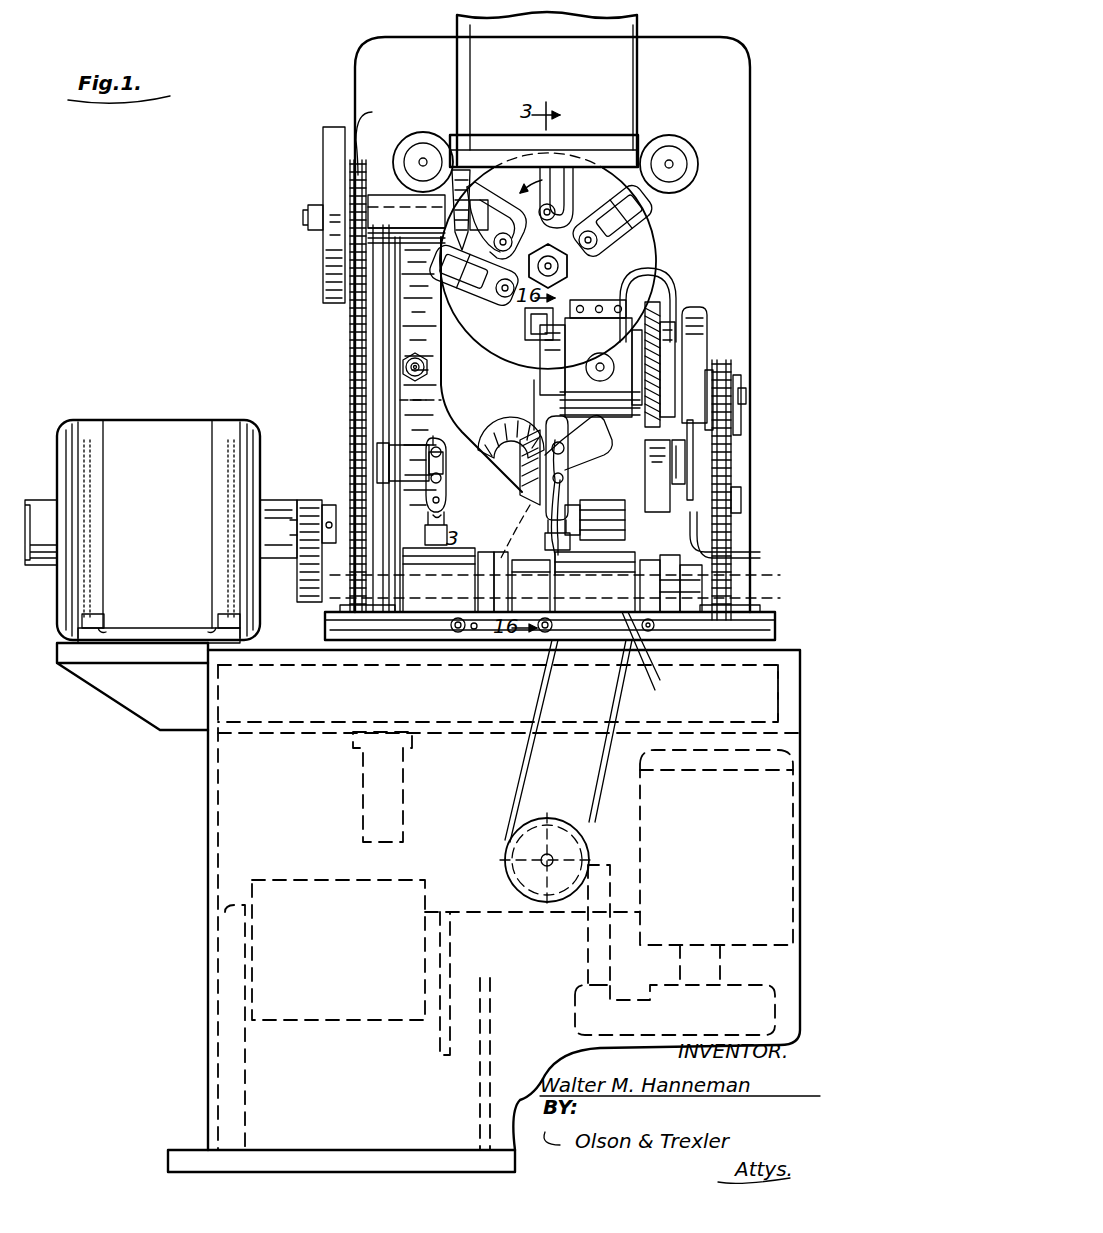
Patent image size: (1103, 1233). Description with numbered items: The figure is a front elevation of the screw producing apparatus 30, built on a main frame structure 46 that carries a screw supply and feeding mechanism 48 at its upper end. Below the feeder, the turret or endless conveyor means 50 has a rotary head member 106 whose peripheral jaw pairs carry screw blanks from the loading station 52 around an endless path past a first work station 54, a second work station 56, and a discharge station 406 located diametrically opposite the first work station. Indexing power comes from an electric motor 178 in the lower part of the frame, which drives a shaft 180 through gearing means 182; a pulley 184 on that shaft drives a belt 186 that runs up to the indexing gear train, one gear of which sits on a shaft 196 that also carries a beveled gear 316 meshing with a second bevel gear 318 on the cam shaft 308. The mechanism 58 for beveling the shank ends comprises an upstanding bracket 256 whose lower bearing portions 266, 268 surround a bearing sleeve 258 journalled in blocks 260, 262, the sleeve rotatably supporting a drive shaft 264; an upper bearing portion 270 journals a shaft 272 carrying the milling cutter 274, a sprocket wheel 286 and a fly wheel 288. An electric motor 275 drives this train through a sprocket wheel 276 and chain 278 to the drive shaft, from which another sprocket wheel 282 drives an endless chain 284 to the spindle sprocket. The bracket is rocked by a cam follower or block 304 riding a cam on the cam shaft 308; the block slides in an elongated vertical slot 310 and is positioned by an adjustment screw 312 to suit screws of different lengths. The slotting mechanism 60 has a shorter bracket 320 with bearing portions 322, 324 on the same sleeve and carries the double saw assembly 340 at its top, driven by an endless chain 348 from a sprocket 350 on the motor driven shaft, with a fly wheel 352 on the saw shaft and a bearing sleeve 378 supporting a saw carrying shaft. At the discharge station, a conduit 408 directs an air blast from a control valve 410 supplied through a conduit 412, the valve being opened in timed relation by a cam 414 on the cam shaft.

The apparatus 30 is at (345, 355).
The main frame structure 46 is at (752, 270).
The screw supply and feeding mechanism 48 is at (645, 84).
The turret or endless conveyor means 50 is at (655, 245).
The screw feeding or loading station 52 is at (554, 170).
The first work station 54 is at (470, 170).
The second work station 56 is at (520, 388).
The mechanism for working the ends of screw blanks 58 is at (340, 335).
The mechanism for forming the slots 60 is at (715, 360).
The head member 106 is at (592, 192).
The electric motor or prime mover 178 is at (702, 760).
The shaft 180 is at (540, 860).
The gearing means 182 is at (575, 1014).
The pulley 184 is at (518, 835).
The belt 186 is at (530, 772).
The shaft 196 is at (545, 418).
The bracket 256 is at (412, 398).
The bearing sleeve 258 is at (432, 612).
The block 260 is at (462, 620).
The block 262 is at (590, 612).
The drive shaft 264 is at (480, 640).
The bearing portion 266 is at (345, 630).
The bearing portion 268 is at (530, 645).
The bearing portion 270 is at (385, 200).
The shaft 272 is at (338, 256).
The milling cutter 274 is at (473, 165).
The electric motor 275 is at (110, 440).
The sprocket wheel 276 is at (285, 512).
The chain 278 is at (292, 577).
The sprocket wheel 282 is at (365, 620).
The endless chain 284 is at (366, 370).
The sprocket wheel 286 is at (358, 120).
The fly wheel 288 is at (332, 152).
The cam follower or block 304 is at (446, 462).
The cam shaft 308 is at (505, 446).
The elongated vertical slot 310 is at (382, 446).
The adjustment screw 312 is at (370, 520).
The beveled gear 316 is at (470, 430).
The second bevel gear 318 is at (512, 530).
The bracket 320 is at (442, 540).
The bearing portion 322 is at (535, 650).
The bearing portion 324 is at (651, 656).
The double saw assembly 340 is at (620, 348).
The endless chain 348 is at (733, 445).
The sprocket 350 is at (725, 612).
The fly wheel 352 is at (697, 326).
The bearing sleeve 378 is at (628, 420).
The discharge station 406 is at (665, 300).
The conduit 408 is at (640, 292).
The control valve 410 is at (680, 495).
The conduit 412 is at (740, 556).
The cam 414 is at (686, 470).